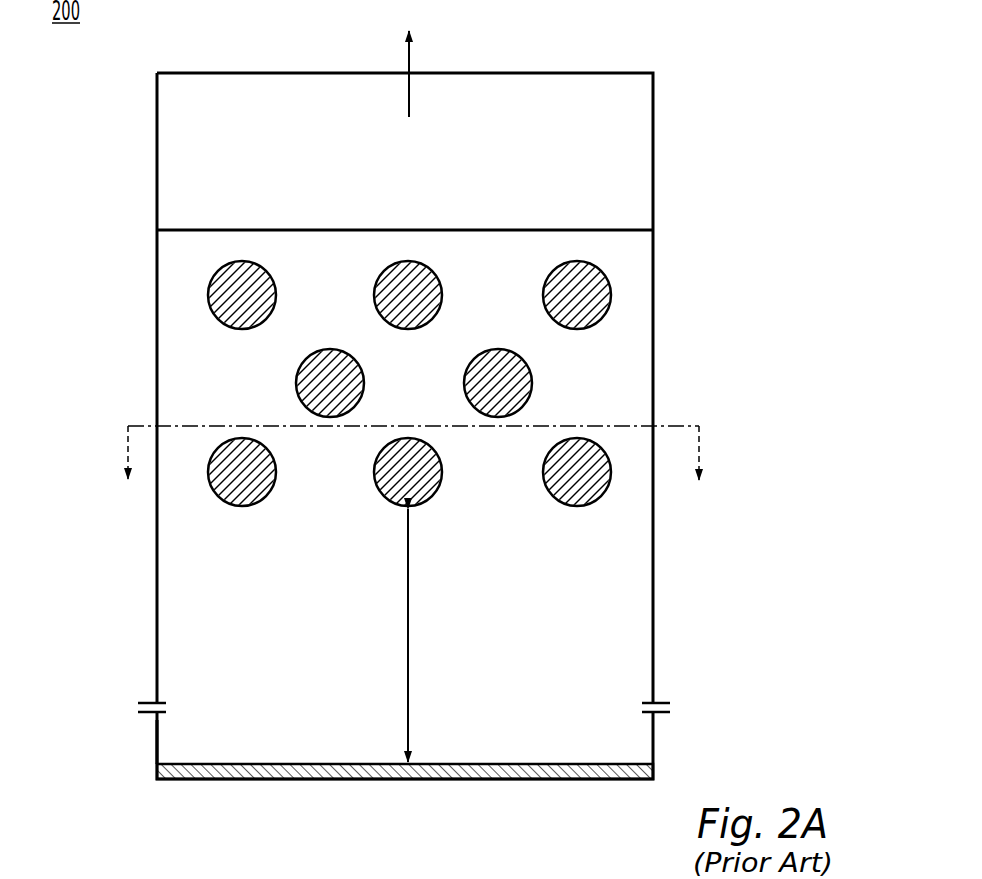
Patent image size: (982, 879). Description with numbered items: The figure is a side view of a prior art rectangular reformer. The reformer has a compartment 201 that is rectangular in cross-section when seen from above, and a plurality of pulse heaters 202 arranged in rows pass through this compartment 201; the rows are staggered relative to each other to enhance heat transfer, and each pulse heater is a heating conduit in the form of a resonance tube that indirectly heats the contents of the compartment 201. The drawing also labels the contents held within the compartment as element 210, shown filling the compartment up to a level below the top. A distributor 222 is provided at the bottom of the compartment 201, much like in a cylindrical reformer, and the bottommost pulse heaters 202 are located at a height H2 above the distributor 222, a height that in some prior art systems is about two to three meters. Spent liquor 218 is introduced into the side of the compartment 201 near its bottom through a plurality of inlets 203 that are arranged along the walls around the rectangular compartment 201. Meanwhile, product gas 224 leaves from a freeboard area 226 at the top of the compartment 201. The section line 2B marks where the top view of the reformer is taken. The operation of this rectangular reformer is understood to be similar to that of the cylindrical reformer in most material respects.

The compartment 201 is at (155, 251).
The pulse heaters 202 is at (296, 395).
The inlets 203 is at (153, 703).
The liquid 210 is at (633, 357).
The spent liquor 218 is at (154, 733).
The distributor 222 is at (655, 777).
The product gas 224 is at (411, 61).
The freeboard area 226 is at (636, 176).
The section line 2B is at (413, 453).
The height H2 is at (392, 635).